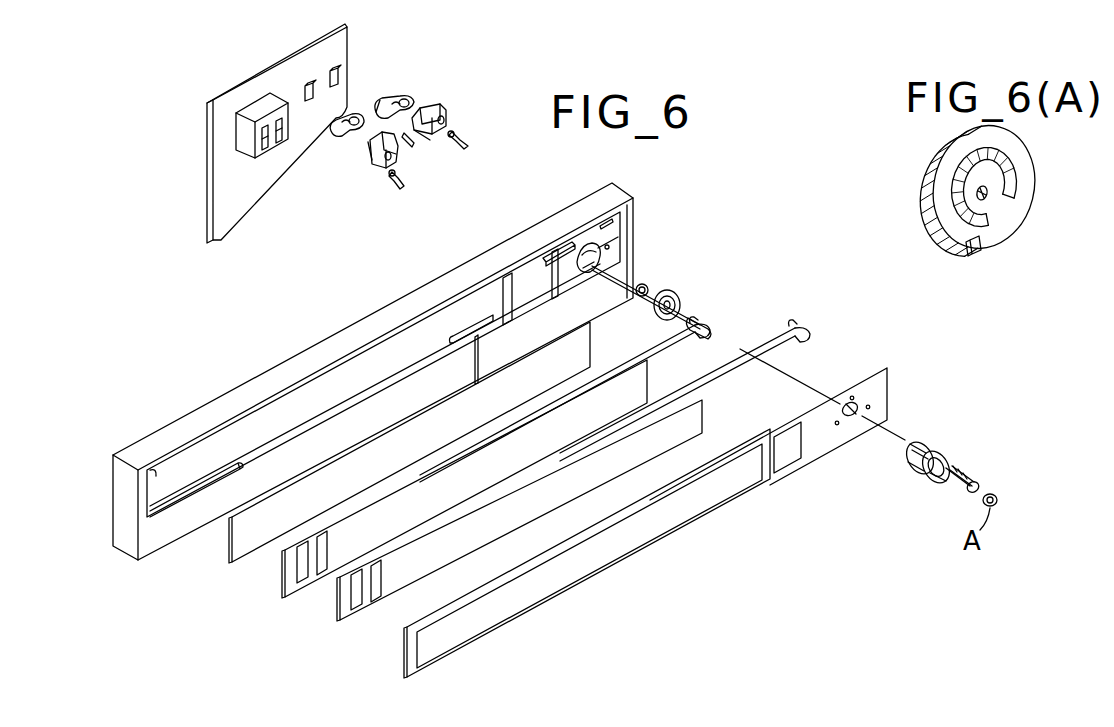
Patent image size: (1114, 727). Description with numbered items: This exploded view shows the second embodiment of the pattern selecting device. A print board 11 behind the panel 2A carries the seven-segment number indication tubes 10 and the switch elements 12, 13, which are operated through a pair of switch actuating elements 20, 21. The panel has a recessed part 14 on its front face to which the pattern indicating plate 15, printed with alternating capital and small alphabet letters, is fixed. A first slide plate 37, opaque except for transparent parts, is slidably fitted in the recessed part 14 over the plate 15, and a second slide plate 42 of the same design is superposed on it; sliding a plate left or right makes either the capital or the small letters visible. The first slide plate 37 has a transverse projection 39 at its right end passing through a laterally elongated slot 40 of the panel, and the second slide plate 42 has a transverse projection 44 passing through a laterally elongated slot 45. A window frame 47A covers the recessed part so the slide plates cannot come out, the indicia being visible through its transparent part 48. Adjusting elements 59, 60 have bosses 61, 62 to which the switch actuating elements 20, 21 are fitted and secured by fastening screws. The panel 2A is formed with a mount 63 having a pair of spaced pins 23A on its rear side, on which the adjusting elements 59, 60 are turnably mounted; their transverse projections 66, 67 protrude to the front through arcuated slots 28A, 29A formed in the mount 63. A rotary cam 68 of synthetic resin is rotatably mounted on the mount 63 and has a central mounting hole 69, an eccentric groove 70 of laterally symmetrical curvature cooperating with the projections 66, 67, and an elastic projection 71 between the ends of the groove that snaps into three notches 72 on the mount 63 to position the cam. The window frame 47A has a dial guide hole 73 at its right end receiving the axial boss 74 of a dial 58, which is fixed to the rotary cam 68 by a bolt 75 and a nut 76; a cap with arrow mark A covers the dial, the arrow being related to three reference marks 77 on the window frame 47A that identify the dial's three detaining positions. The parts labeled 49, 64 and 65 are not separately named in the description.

In FIG. 6, the panel 2A is at (422, 358).
In FIG. 6, the 7-segment number indication tubes 10 is at (238, 133).
In FIG. 6, the print board 11 is at (210, 174).
In FIG. 6, the switch element 12 is at (304, 90).
In FIG. 6, the switch element 13 is at (330, 77).
In FIG. 6, the recessed part 14 is at (152, 474).
In FIG. 6, the pattern indicating plate 15 is at (392, 439).
In FIG. 6, the switch actuating element 20 is at (333, 136).
In FIG. 6, the switch actuating element 21 is at (384, 100).
In FIG. 6, the spaced pins 23A is at (572, 266).
In FIG. 6, the shutter plate 28A is at (608, 312).
In FIG. 6, the arcuated slots 29A is at (790, 330).
In FIG. 6, the first slide plate 37 is at (283, 584).
In FIG. 6, the transverse projection 39 is at (696, 322).
In FIG. 6, the laterally elongated slot 40 is at (560, 246).
In FIG. 6, the second slide plate 42 is at (338, 608).
In FIG. 6, the transverse projection 44 is at (792, 327).
In FIG. 6, the laterally elongated slot 45 is at (605, 222).
In FIG. 6, the window frame 47A is at (549, 554).
In FIG. 6, the transparent part 48 is at (498, 612).
In FIG. 6, the end plate 49 is at (797, 438).
In FIG. 6, the dial 58 is at (945, 458).
In FIG. 6, the adjusting element 59 is at (374, 168).
In FIG. 6, the adjusting element 60 is at (446, 118).
In FIG. 6, the boss 61 is at (370, 150).
In FIG. 6, the boss 62 is at (404, 104).
In FIG. 6, the mount 63 is at (622, 236).
In FIG. 6, the screw 64 is at (404, 182).
In FIG. 6, the bracket leg 65 is at (442, 138).
In FIG. 6, the transverse projection 66 is at (413, 146).
In FIG. 6, the transverse projection 67 is at (460, 142).
In FIG. 6, the rotary cam 68 is at (680, 302).
In FIG. 6A, the rotary cam 68 is at (1009, 200).
In FIG. 6A, the central mounting hole 69 is at (986, 198).
In FIG. 6A, the eccentric groove 70 is at (1012, 182).
In FIG. 6A, the elastic projection 71 is at (978, 254).
In FIG. 6, the notches 72 is at (608, 278).
In FIG. 6, the dial guide hole 73 is at (855, 420).
In FIG. 6, the axial boss 74 is at (924, 446).
In FIG. 6, the bolt 75 is at (980, 486).
In FIG. 6, the nut 76 is at (648, 288).
In FIG. 6, the reference marks 77 is at (872, 407).